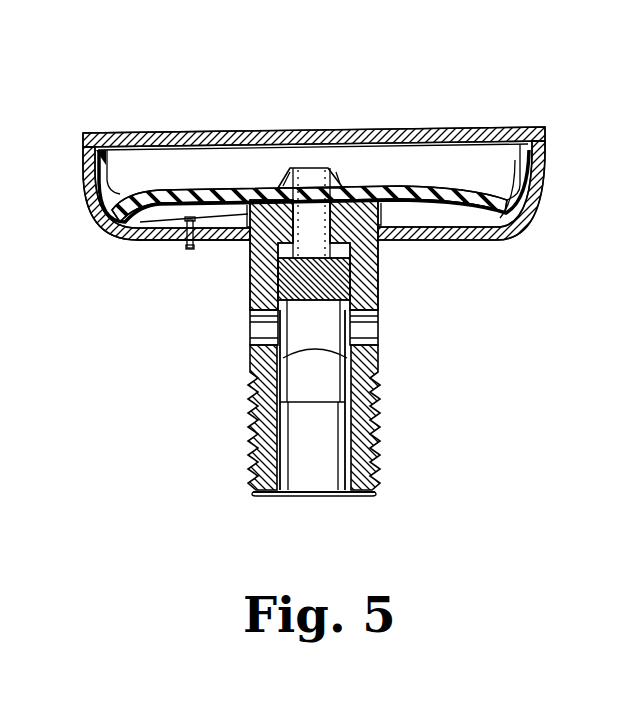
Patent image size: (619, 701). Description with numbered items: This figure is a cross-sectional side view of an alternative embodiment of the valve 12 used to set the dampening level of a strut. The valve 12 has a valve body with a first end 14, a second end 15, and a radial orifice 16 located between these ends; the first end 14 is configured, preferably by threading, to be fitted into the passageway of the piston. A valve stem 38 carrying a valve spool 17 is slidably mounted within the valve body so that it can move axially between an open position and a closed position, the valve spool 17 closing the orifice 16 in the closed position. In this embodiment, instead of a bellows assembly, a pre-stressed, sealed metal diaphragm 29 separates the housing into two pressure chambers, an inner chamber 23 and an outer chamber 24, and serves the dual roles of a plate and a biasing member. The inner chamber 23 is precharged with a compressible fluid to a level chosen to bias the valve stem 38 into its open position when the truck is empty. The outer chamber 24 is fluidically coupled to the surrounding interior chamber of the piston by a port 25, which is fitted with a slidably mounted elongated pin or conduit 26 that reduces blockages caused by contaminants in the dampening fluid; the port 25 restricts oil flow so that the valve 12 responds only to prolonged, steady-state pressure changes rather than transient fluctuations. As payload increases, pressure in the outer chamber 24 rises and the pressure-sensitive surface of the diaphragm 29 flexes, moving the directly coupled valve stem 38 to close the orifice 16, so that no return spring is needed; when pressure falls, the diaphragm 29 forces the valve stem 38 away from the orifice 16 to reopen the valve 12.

The valve 12 is at (162, 378).
The first end 14 is at (318, 496).
The second end 15 is at (147, 135).
The radial orifice 16 is at (250, 312).
The valve spool 17 is at (347, 358).
The inner chamber 23 is at (427, 160).
The outer chamber 24 is at (412, 215).
The port 25 is at (165, 240).
The elongated pin or conduit 26 is at (190, 250).
The metal diaphragm 29 is at (500, 228).
The valve stem 38 is at (352, 290).